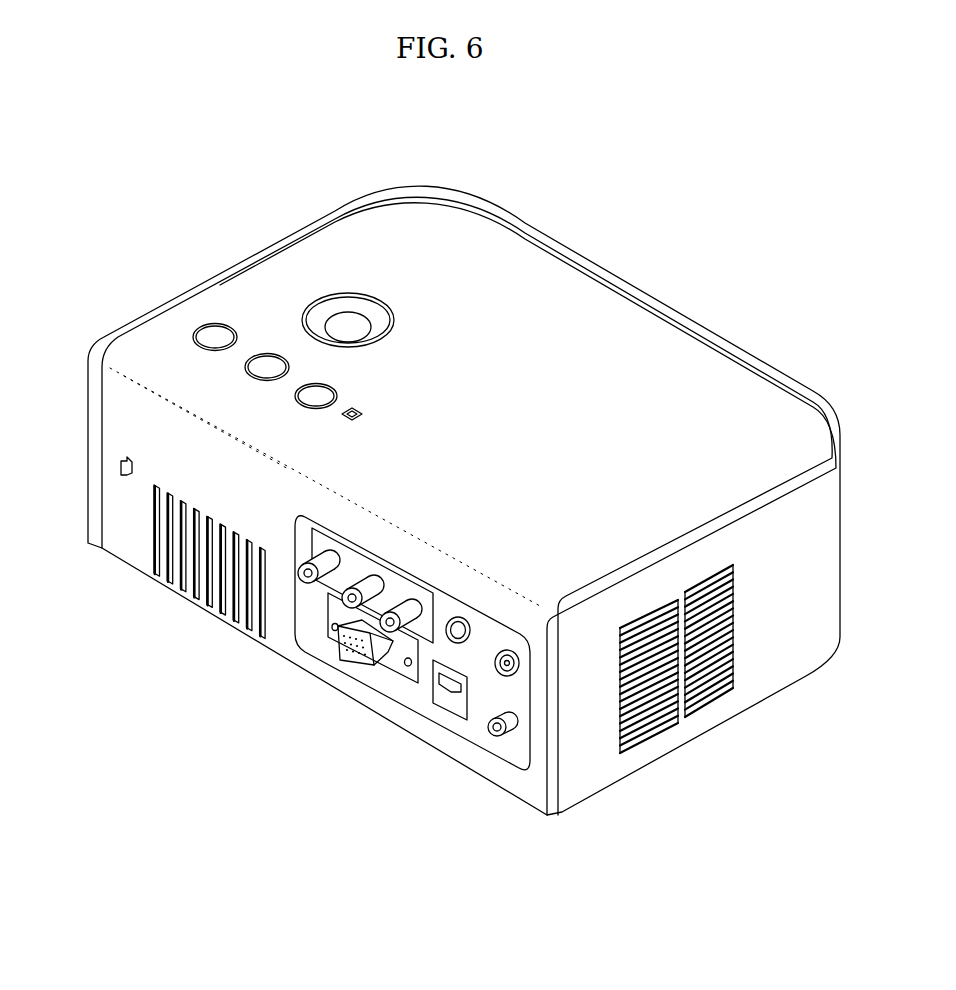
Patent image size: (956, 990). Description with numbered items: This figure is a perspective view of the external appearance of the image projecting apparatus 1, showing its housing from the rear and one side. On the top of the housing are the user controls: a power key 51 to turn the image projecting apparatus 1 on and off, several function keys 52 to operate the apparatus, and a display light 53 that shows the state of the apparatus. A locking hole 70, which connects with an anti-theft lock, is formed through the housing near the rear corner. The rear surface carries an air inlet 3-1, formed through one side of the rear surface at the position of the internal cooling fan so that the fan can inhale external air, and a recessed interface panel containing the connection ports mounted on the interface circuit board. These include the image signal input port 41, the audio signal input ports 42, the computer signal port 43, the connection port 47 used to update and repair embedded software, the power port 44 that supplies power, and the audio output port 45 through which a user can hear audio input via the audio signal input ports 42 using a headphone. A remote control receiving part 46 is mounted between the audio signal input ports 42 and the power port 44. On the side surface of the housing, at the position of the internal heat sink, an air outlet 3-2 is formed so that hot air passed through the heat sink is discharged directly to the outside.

The image projecting apparatus 1 is at (659, 184).
The air inlet 3-1 is at (193, 577).
The air outlet 3-2 is at (642, 717).
The image signal input port 41 is at (302, 581).
The audio signal input ports 42 is at (370, 632).
The computer signal port 43 is at (372, 668).
The power port 44 is at (505, 676).
The audio output port 45 is at (502, 736).
The remote control receiving part 46 is at (455, 637).
The connection port 47 is at (444, 684).
The power key 51 is at (330, 302).
The function keys 52 is at (316, 388).
The display light 53 is at (357, 410).
The locking hole 70 is at (119, 465).